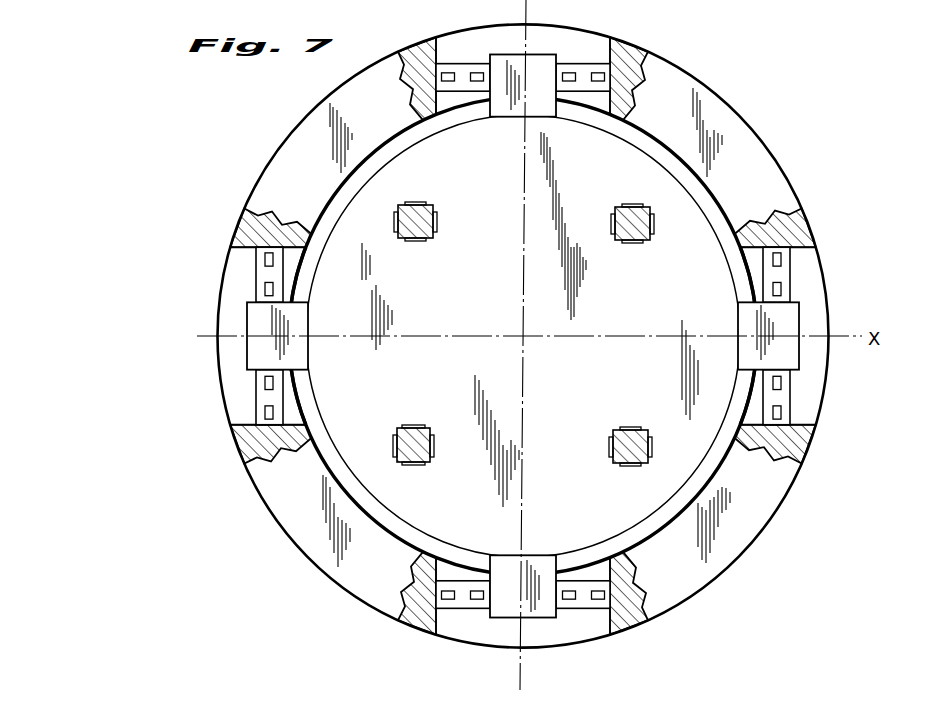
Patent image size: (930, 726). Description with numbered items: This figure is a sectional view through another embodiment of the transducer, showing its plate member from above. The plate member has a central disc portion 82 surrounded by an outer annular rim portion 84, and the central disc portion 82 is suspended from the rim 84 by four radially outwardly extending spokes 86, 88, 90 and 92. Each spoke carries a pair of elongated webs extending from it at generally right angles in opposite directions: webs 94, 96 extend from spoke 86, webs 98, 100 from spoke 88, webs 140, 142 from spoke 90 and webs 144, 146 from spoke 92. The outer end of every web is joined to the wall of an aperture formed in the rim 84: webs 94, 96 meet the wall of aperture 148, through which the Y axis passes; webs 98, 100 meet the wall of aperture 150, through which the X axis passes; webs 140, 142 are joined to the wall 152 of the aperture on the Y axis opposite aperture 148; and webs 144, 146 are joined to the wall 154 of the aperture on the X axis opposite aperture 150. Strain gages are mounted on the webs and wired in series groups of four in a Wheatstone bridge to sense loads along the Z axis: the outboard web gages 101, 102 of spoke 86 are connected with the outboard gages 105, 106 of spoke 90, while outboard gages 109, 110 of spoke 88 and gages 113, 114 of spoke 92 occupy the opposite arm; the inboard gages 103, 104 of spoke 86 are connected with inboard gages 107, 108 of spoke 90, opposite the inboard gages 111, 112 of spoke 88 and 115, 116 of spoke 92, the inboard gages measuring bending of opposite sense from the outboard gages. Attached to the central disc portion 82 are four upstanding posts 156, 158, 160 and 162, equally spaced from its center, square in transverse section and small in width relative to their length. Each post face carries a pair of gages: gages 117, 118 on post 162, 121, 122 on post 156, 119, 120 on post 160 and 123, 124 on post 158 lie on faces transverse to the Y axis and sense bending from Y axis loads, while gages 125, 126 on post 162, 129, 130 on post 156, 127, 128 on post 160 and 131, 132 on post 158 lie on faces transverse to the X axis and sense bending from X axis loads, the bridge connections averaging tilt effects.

The central disc portion 82 is at (578, 375).
The outer annular rim portion 84 is at (297, 541).
The spoke 86 is at (529, 53).
The spoke 88 is at (800, 315).
The spoke 90 is at (533, 617).
The spoke 92 is at (247, 315).
The web 94 is at (464, 92).
The web 96 is at (583, 63).
The web 98 is at (746, 301).
The web 100 is at (748, 408).
The outboard web gage 101 is at (598, 80).
The outboard web gage 102 is at (452, 62).
The inboard web gage 103 is at (570, 72).
The inboard web gage 104 is at (478, 72).
The outboard web gage 105 is at (445, 598).
The outboard web gage 106 is at (595, 600).
The inboard web gage 107 is at (475, 598).
The inboard web gage 108 is at (567, 598).
The outboard web gage 109 is at (781, 257).
The outboard web gage 110 is at (781, 411).
The inboard web gage 111 is at (782, 287).
The inboard web gage 112 is at (781, 381).
The web gage 113 is at (266, 257).
The web gage 114 is at (266, 408).
The inboard web gage 115 is at (266, 285).
The inboard web gage 116 is at (266, 381).
The strain gage 117 is at (407, 465).
The strain gage 118 is at (420, 426).
The strain gage 119 is at (628, 466).
The strain gage 120 is at (622, 430).
The strain gage 121 is at (415, 241).
The strain gage 122 is at (405, 205).
The strain gage 123 is at (620, 243).
The strain gage 124 is at (623, 207).
The strain gage 125 is at (434, 445).
The strain gage 126 is at (393, 443).
The strain gage 127 is at (652, 447).
The strain gage 128 is at (609, 447).
The strain gage 129 is at (437, 220).
The strain gage 130 is at (394, 222).
The strain gage 131 is at (654, 233).
The strain gage 132 is at (611, 222).
The web 140 is at (580, 582).
The web 142 is at (458, 582).
The web 144 is at (291, 387).
The web 146 is at (291, 272).
The aperture 148 is at (608, 50).
The aperture 150 is at (744, 250).
The aperture wall 152 is at (436, 632).
The aperture wall 154 is at (237, 421).
The upstanding post 156 is at (429, 241).
The upstanding post 158 is at (642, 243).
The upstanding post 160 is at (656, 412).
The upstanding post 162 is at (402, 426).